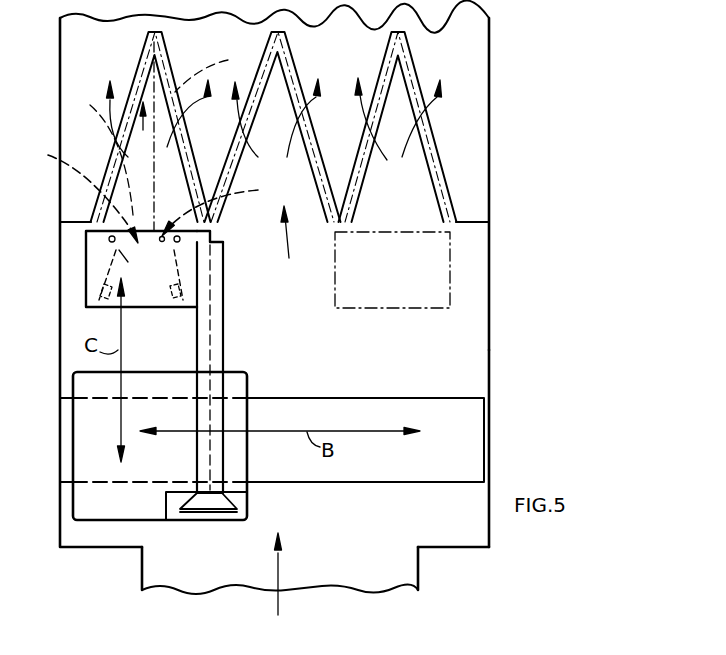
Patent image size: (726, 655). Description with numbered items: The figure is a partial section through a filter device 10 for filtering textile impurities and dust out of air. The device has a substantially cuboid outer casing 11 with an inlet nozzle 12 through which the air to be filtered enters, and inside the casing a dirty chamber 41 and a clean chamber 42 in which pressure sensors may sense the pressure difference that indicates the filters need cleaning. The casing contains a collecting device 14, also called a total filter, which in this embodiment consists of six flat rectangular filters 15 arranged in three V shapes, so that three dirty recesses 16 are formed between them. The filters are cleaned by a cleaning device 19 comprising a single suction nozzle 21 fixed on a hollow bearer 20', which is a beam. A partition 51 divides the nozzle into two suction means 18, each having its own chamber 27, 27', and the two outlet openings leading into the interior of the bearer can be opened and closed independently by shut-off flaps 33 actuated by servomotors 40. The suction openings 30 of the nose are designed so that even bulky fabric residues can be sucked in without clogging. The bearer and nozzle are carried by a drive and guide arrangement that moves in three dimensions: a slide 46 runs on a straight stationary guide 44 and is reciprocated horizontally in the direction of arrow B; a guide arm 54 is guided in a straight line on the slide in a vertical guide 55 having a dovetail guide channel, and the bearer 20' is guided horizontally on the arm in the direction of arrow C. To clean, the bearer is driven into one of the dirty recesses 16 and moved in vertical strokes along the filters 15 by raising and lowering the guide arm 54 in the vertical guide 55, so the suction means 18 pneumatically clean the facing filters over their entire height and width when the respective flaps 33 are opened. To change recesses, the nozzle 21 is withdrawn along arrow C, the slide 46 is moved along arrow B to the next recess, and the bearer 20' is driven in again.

The filter device 10 is at (530, 241).
The outer casing 11 is at (497, 320).
The inlet nozzle 12 is at (403, 570).
The collecting device 14 is at (363, 257).
The filter 15 is at (146, 44).
The dirty recess 16 is at (300, 182).
The suction means 18 is at (127, 160).
The cleaning device 19 is at (216, 237).
The hollow bearer 20' is at (109, 323).
The suction nozzle 21 is at (134, 73).
The chamber 27 is at (78, 192).
The chamber 27' is at (224, 205).
The suction opening 30 is at (156, 127).
The shut-off flap 33 is at (128, 262).
The servomotor 40 is at (100, 280).
The dirty chamber 41 is at (468, 375).
The clean chamber 42 is at (472, 107).
The stationary guide 44 is at (405, 410).
The slide 46 is at (248, 467).
The partition 51 is at (158, 212).
The guide arm 54 is at (217, 343).
The vertical guide 55 is at (246, 510).